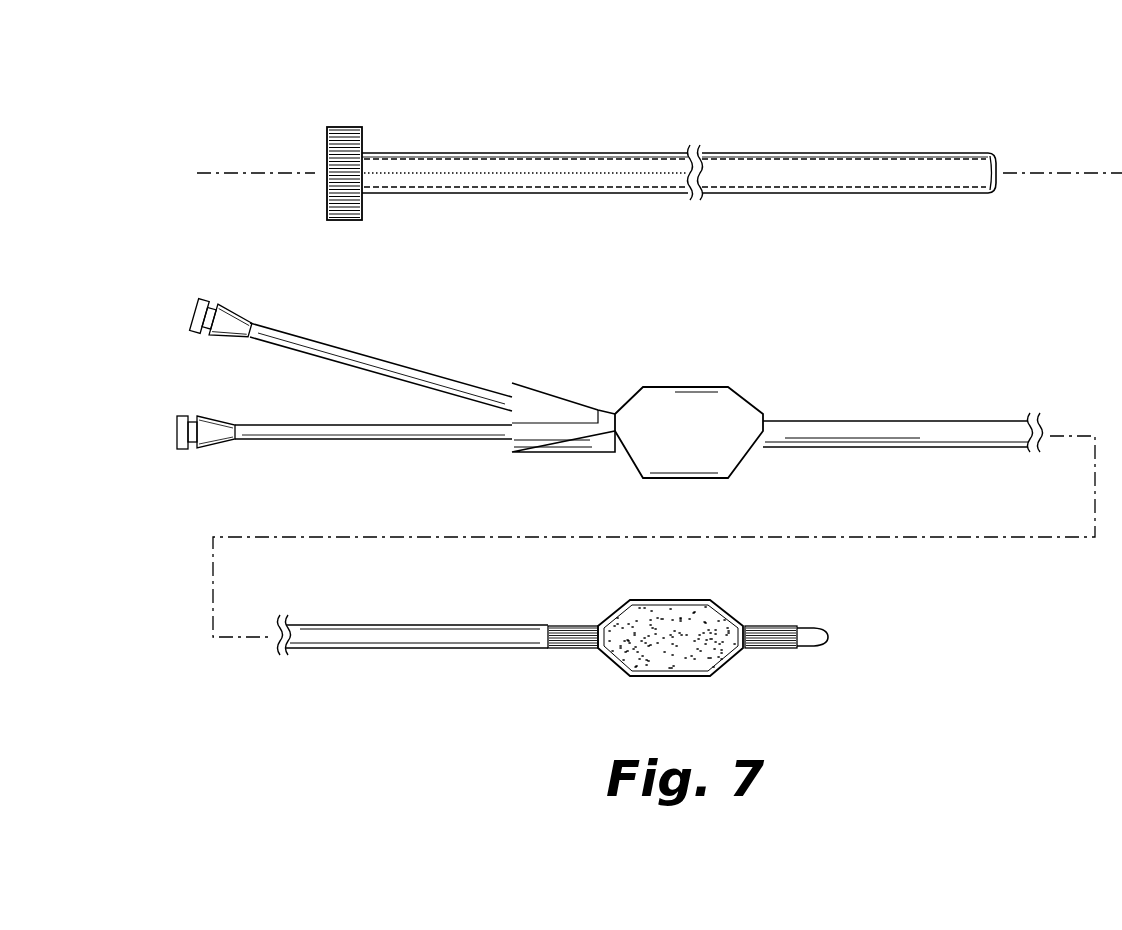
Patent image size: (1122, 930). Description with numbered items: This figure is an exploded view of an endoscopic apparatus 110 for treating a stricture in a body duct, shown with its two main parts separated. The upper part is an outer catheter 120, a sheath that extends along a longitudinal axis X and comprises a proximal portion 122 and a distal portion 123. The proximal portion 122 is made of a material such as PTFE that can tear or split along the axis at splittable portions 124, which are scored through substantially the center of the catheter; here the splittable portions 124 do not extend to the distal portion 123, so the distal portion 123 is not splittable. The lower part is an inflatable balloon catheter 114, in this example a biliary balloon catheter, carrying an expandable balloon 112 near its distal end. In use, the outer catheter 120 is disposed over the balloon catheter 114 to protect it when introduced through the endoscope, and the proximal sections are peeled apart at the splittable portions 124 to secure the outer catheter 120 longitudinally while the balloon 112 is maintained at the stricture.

The endoscopic apparatus 110 is at (245, 88).
The outer catheter 120 is at (588, 145).
The proximal portion 122 is at (582, 190).
The distal portion 123 is at (830, 194).
The splittable portions 124 is at (537, 175).
The balloon catheter 114 is at (900, 420).
The expandable balloon 112 is at (735, 660).